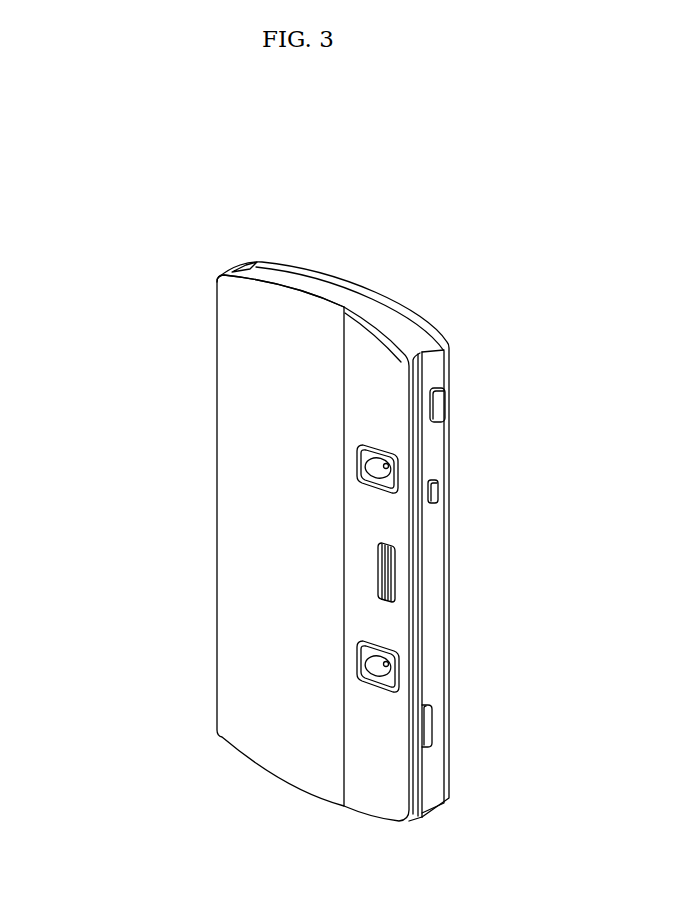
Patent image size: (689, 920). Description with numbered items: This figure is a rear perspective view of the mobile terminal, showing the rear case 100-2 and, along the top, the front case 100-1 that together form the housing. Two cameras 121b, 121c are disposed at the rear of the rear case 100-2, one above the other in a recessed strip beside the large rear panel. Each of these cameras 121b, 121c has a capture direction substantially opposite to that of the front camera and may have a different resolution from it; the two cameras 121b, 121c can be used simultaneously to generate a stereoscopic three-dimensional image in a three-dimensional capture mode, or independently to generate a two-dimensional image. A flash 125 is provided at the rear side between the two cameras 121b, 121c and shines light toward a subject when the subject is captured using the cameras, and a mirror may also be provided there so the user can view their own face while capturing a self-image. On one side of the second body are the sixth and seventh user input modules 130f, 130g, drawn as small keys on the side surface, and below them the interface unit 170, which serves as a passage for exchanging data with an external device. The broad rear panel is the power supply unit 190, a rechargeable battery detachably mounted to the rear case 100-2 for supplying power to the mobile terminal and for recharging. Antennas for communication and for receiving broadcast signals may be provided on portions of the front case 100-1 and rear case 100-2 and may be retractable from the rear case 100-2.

The front case 100-1 is at (254, 262).
The rear case 100-2 is at (232, 272).
The sixth user input module 130f is at (440, 410).
The seventh user input module 130g is at (435, 493).
The camera 121b is at (375, 472).
The camera 121c is at (373, 668).
The flash 125 is at (393, 570).
The power supply unit 190 is at (237, 598).
The interface unit 170 is at (428, 720).